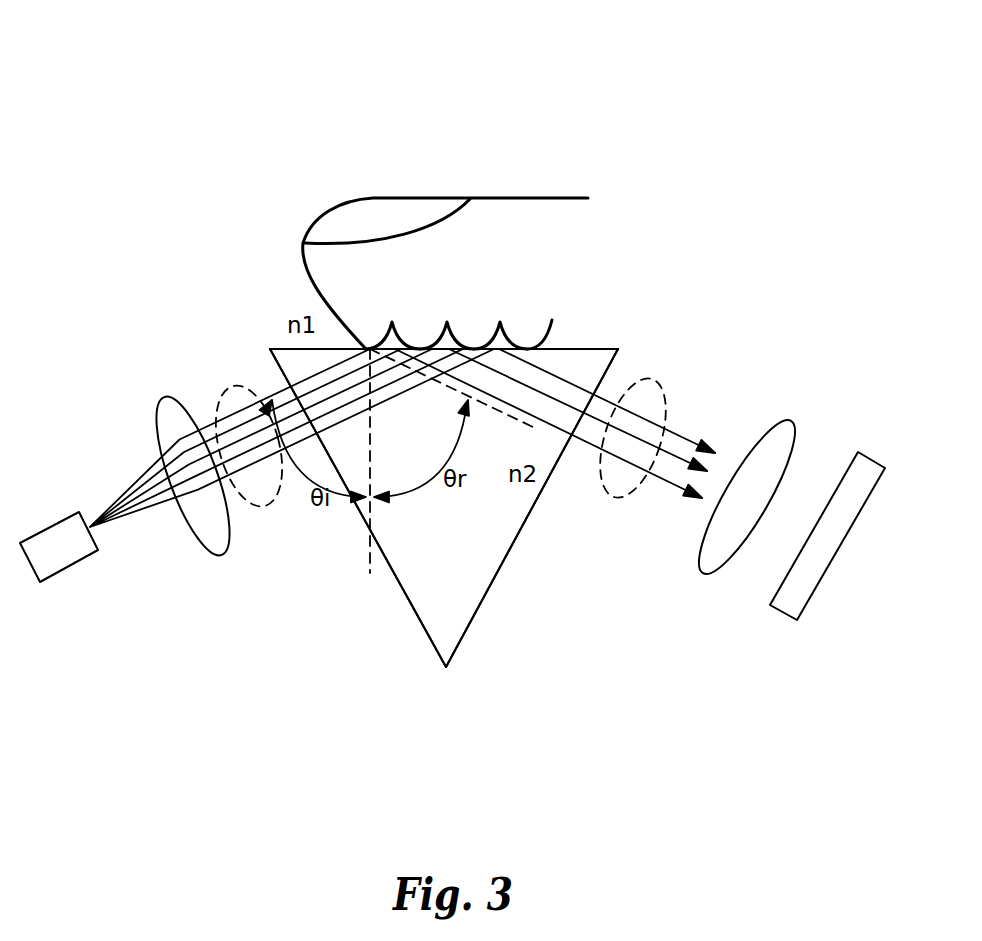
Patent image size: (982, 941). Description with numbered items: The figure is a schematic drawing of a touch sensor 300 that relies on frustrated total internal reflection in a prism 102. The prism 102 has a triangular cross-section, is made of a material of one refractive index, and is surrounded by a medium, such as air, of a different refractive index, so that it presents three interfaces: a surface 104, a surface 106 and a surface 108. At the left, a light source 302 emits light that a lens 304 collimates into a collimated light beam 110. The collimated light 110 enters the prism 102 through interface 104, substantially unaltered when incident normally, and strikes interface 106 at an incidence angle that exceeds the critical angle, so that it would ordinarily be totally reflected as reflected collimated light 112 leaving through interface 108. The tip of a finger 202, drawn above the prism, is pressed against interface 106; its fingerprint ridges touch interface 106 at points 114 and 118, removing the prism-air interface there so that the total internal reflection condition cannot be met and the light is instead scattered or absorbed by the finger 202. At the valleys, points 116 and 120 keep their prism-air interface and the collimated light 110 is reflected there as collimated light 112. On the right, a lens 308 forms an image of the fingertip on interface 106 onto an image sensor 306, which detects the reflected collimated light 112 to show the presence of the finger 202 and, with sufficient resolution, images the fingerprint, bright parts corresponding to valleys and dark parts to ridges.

The touch sensor 300 is at (211, 108).
The prism 102 is at (467, 600).
The surface 104 is at (430, 636).
The surface 106 is at (598, 349).
The surface 108 is at (465, 638).
The collimated light 110 is at (233, 388).
The reflected light 112 is at (605, 492).
The point 114 is at (367, 348).
The point 116 is at (400, 346).
The point 118 is at (446, 324).
The point 120 is at (500, 322).
The finger 202 is at (567, 198).
The light source 302 is at (85, 553).
The lens 304 is at (225, 553).
The image sensor 306 is at (810, 607).
The lens 308 is at (723, 568).